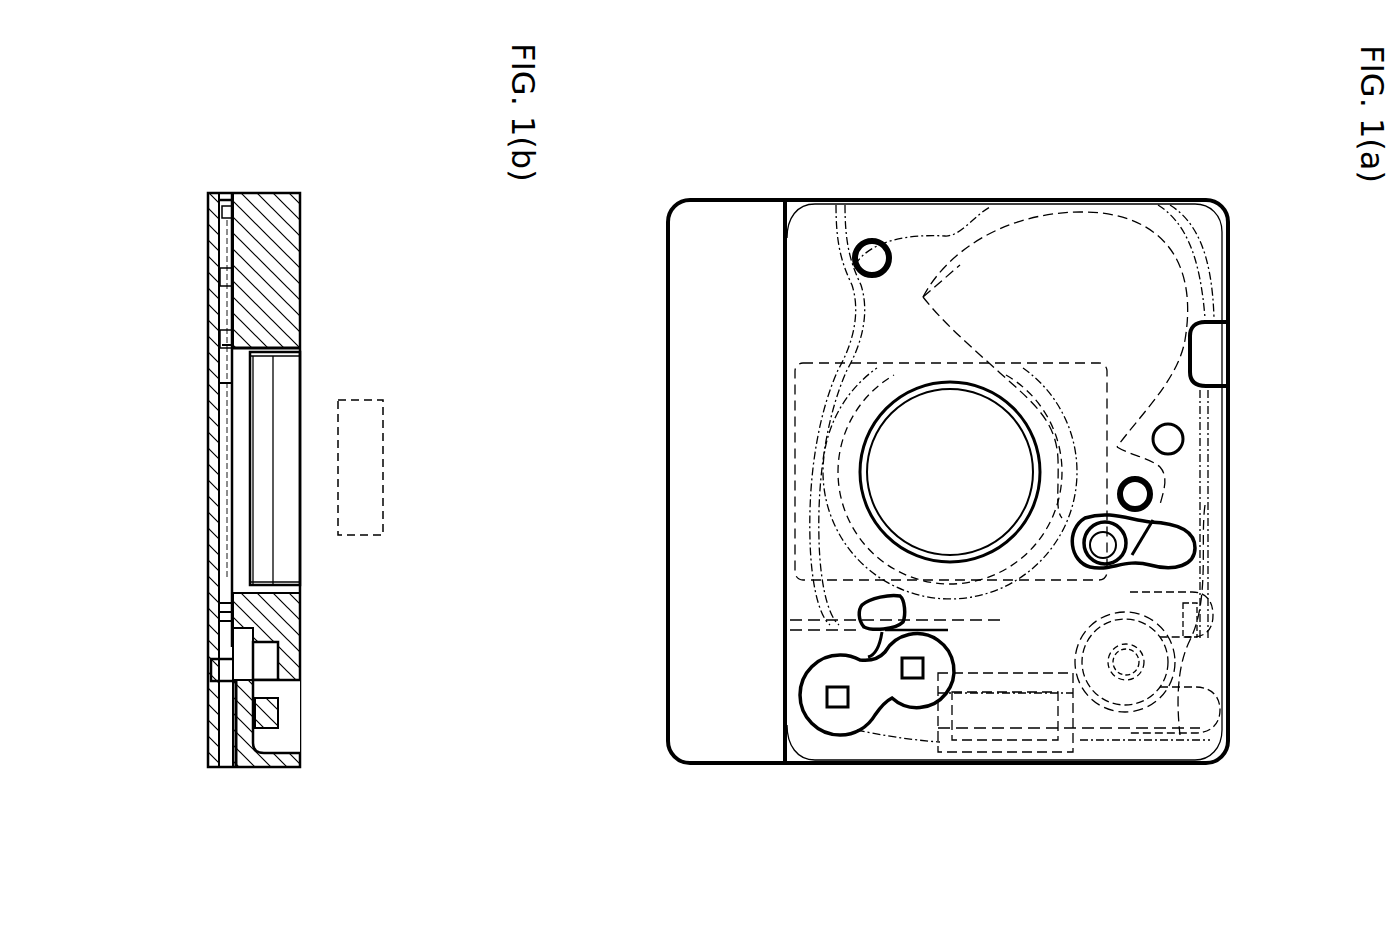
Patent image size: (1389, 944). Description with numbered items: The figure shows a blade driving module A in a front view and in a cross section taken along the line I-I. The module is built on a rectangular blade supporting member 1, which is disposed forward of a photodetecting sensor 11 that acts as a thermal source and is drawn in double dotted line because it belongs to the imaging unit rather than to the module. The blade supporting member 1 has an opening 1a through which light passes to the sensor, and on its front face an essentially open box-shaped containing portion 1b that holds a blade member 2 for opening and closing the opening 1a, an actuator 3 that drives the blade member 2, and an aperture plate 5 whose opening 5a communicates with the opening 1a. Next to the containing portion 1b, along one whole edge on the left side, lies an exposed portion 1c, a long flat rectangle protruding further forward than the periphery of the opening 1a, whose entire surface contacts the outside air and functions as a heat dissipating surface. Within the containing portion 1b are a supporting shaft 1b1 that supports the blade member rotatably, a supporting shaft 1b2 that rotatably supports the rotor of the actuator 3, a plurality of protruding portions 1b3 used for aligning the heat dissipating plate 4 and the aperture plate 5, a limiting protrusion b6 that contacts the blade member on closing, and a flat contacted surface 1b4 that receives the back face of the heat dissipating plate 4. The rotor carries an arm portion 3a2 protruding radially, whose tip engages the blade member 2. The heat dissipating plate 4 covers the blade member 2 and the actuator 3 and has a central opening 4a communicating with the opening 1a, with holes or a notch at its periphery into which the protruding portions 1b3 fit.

In FIG. 1b, the blade supporting member 1 is at (256, 193).
In FIG. 1a, the blade supporting member 1 is at (1232, 254).
In FIG. 1b, the opening 1a is at (282, 462).
In FIG. 1b, the containing portion 1b is at (226, 345).
In FIG. 1a, the containing portion 1b is at (990, 222).
In FIG. 1a, the supporting shaft 1b1 is at (1140, 497).
In FIG. 1a, the supporting shaft 1b2 is at (1130, 655).
In FIG. 1a, the protruding portions 1b3 is at (872, 255).
In FIG. 1b, the contacted surface 1b4 is at (222, 208).
In FIG. 1a, the exposed portion 1c is at (713, 420).
In FIG. 1b, the blade member 2 is at (224, 286).
In FIG. 1a, the blade member 2 is at (1127, 205).
In FIG. 1b, the actuator 3 is at (248, 768).
In FIG. 1a, the actuator 3 is at (1205, 645).
In FIG. 1a, the arm portion 3a2 is at (935, 578).
In FIG. 1b, the heat dissipating plate 4 is at (212, 598).
In FIG. 1a, the heat dissipating plate 4 is at (815, 230).
In FIG. 1b, the opening 4a is at (214, 385).
In FIG. 1b, the aperture plate 5 is at (262, 520).
In FIG. 1a, the aperture plate 5 is at (1200, 505).
In FIG. 1b, the opening 5a is at (234, 520).
In FIG. 1a, the opening 5a is at (902, 560).
In FIG. 1b, the photodetecting sensor 11 is at (408, 412).
In FIG. 1a, the boss hole b6 is at (860, 608).
In FIG. 1b, the blade driving module A is at (342, 172).
In FIG. 1a, the blade driving module A is at (1110, 145).
In FIG. 1a, the section line I is at (947, 165).